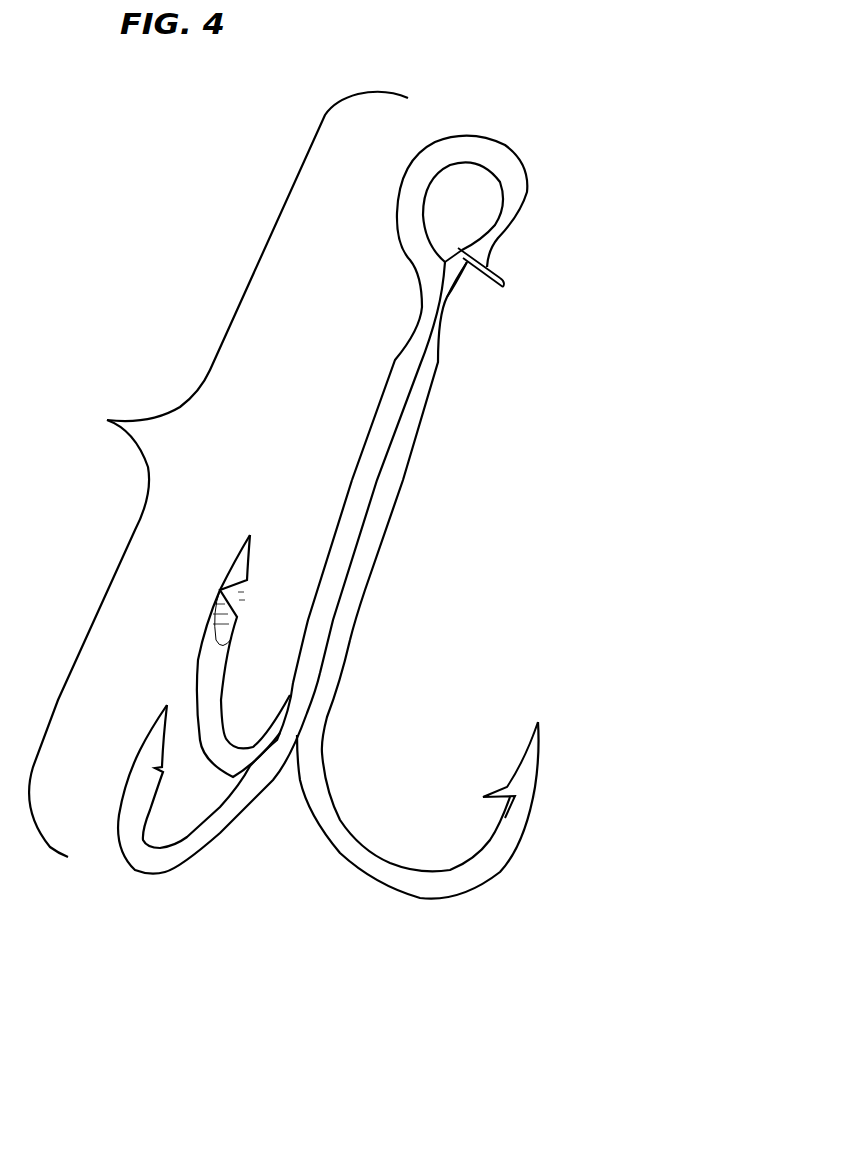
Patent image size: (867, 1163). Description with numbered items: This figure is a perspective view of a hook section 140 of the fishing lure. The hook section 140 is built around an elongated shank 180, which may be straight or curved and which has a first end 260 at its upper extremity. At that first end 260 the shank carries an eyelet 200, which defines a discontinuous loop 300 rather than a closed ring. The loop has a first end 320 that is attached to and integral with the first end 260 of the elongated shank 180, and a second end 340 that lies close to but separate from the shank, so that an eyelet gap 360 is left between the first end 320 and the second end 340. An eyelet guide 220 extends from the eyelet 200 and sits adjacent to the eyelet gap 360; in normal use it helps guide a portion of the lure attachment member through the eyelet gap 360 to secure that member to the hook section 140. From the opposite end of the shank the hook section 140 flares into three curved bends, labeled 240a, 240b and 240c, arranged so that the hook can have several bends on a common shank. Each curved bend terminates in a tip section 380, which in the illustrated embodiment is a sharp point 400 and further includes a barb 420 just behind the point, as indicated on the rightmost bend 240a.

The hook section 140 is at (218, 474).
The eyelet 200 is at (432, 128).
The discontinuous loop 300 is at (527, 167).
The second end 340 is at (487, 250).
The eyelet guide 220 is at (497, 281).
The eyelet gap 360 is at (460, 270).
The first end 320 is at (458, 270).
The elongated shank 180 is at (402, 459).
The first end 260 is at (420, 322).
The curved bend 240a is at (492, 825).
The curved bend 240b is at (167, 867).
The curved bend 240c is at (243, 740).
The barb 420 is at (507, 787).
The tip section 380 is at (548, 733).
The sharp point 400 is at (538, 735).